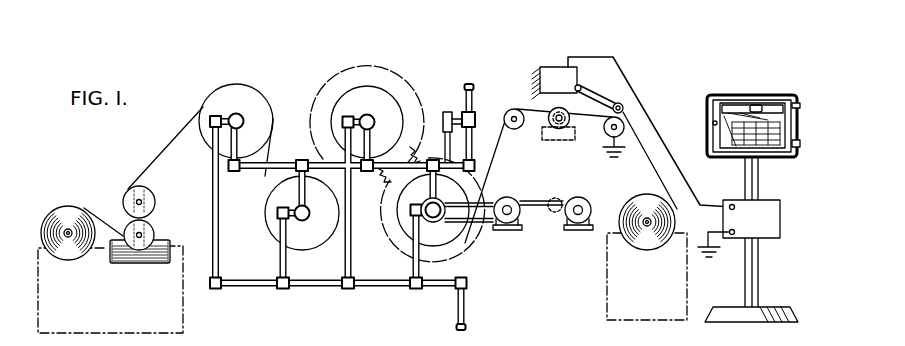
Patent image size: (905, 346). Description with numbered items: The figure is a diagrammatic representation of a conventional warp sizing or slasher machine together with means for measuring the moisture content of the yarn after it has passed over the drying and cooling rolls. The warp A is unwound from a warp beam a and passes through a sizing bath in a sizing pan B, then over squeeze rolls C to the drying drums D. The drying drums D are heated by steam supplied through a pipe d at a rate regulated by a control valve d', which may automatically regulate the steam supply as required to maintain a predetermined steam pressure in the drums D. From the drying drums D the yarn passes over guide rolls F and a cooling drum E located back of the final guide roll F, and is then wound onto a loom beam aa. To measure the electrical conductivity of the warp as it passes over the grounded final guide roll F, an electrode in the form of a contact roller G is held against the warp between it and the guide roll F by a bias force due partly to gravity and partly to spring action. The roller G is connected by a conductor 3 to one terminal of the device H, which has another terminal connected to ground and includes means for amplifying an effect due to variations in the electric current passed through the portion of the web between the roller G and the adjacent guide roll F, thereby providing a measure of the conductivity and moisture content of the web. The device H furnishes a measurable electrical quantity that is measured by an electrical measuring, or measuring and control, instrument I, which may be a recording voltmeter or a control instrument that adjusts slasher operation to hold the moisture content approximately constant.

The warp beam a is at (62, 212).
The warp A is at (153, 158).
The sizing pan B is at (146, 264).
The squeeze rolls C is at (150, 230).
The drying drums D is at (336, 114).
The pipe d is at (463, 96).
The control valve d' is at (446, 124).
The cooling drum E is at (560, 128).
The guide rolls F is at (513, 112).
The contact roller G is at (620, 103).
The conductor 3 is at (645, 104).
The loom beam aa is at (638, 203).
The device H is at (739, 228).
The instrument I is at (729, 97).